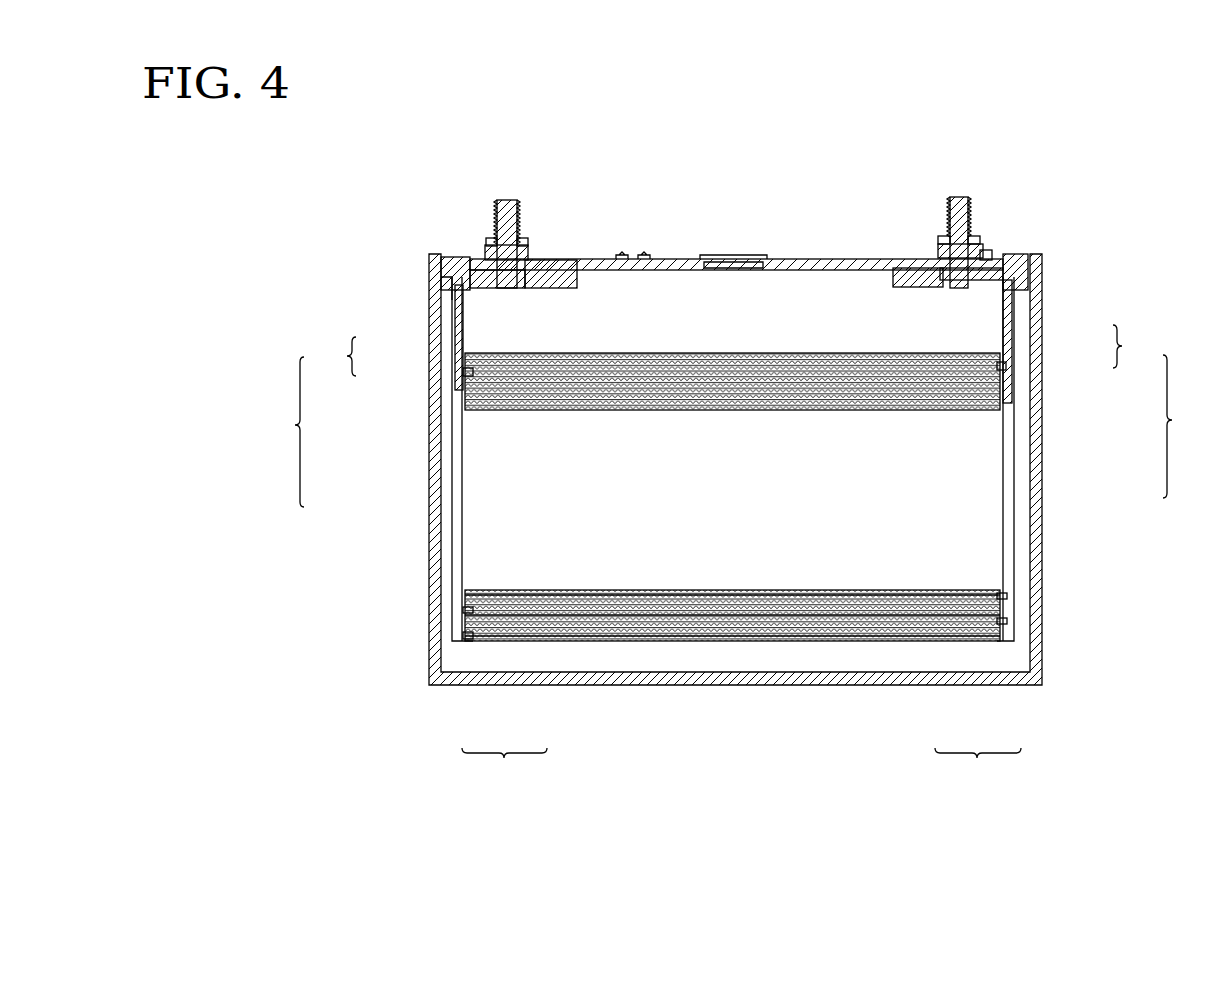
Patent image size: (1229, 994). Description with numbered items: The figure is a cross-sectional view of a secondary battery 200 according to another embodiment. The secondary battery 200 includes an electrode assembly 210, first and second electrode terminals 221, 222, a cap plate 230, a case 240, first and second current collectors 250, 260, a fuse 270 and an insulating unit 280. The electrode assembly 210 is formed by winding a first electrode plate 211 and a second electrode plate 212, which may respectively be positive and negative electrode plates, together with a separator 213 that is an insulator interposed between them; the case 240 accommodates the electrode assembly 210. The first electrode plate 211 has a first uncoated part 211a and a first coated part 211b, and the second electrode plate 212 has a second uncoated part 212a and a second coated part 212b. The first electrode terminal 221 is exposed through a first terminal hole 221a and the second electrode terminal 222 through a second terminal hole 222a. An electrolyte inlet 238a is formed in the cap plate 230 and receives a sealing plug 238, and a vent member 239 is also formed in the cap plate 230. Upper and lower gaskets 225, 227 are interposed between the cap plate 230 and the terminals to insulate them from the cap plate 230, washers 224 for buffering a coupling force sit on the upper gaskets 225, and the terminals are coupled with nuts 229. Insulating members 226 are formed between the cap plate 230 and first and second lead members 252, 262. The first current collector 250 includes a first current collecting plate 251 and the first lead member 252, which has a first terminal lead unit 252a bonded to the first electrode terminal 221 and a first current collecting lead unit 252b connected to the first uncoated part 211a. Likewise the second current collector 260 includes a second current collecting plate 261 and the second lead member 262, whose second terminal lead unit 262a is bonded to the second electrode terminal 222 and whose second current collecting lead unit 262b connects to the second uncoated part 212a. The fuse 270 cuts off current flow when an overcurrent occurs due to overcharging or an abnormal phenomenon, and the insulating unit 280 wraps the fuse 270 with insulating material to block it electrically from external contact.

The secondary battery 200 is at (759, 108).
The electrode assembly 210 is at (780, 558).
The first electrode plate 211 is at (504, 767).
The first uncoated part 211a is at (462, 643).
The first coated part 211b is at (530, 643).
The second electrode plate 212 is at (978, 767).
The second uncoated part 212a is at (1000, 643).
The second coated part 212b is at (945, 643).
The separator 213 is at (700, 630).
The first electrode terminal 221 is at (508, 198).
The first terminal hole 221a is at (527, 256).
The second electrode terminal 222 is at (957, 195).
The second terminal hole 222a is at (945, 242).
The washer 224 is at (940, 262).
The upper gasket 225 is at (986, 250).
The insulating member 226 is at (560, 272).
The lower gasket 227 is at (930, 264).
The nut 229 is at (490, 238).
The cap plate 230 is at (800, 258).
The sealing plug 238 is at (624, 256).
The electrolyte inlet 238a is at (646, 256).
The vent member 239 is at (733, 256).
The case 240 is at (1040, 580).
The first current collector 250 is at (283, 432).
The first current collecting plate 251 is at (448, 505).
The first lead member 252 is at (334, 356).
The first terminal lead unit 252a is at (512, 282).
The first current collecting lead unit 252b is at (463, 372).
The second current collector 260 is at (1188, 426).
The second current collecting plate 261 is at (1020, 500).
The second lead member 262 is at (1137, 346).
The second terminal lead unit 262a is at (1018, 292).
The second current collecting lead unit 262b is at (1012, 367).
The fuse 270 is at (441, 283).
The insulating unit 280 is at (462, 262).